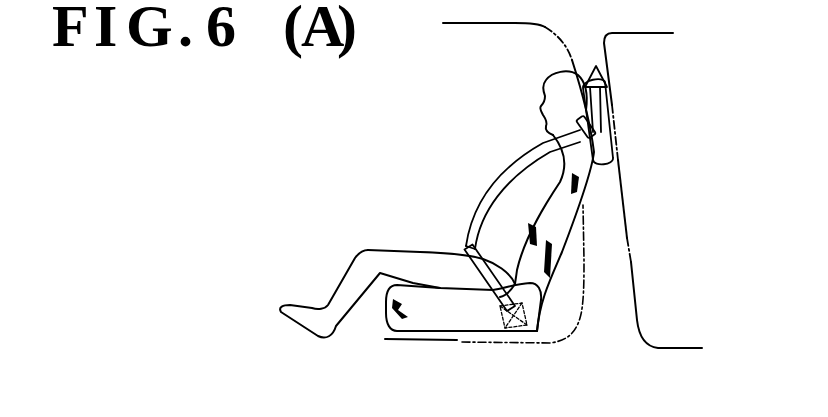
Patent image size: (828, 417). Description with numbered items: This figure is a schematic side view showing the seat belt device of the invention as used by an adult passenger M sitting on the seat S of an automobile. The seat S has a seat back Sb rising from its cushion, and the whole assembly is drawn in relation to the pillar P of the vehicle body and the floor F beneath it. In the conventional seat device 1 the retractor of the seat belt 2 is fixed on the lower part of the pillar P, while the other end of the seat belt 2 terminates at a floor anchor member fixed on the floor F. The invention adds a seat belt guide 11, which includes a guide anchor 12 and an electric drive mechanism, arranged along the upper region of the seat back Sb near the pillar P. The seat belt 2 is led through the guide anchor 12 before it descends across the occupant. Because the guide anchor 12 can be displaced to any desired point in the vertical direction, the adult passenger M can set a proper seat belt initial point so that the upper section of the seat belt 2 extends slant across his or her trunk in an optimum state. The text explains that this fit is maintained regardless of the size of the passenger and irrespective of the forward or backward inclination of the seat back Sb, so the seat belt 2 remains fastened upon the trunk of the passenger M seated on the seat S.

The seat device 1 is at (549, 188).
The seat belt 2 is at (480, 200).
The seat belt guide 11 is at (610, 137).
The guide anchor 12 is at (612, 103).
The adult passenger M is at (530, 171).
The pillar P is at (606, 62).
The seat back Sb is at (565, 215).
The seat S is at (432, 318).
The floor F is at (533, 347).